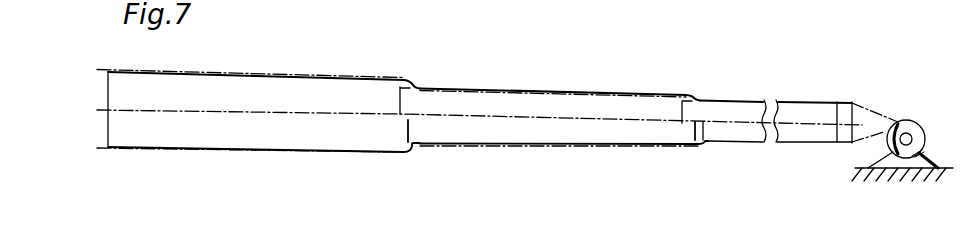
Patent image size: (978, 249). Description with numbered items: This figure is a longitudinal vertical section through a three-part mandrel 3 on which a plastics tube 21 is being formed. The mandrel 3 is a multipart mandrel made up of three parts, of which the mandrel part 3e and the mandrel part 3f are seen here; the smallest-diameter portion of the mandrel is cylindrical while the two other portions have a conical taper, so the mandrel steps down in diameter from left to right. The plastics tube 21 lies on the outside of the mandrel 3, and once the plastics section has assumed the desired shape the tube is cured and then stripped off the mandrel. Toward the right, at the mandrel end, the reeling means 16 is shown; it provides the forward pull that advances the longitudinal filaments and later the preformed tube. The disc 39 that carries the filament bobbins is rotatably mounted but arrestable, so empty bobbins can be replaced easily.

The mandrel 3 is at (660, 74).
The plastics tube 21 is at (212, 73).
The mandrel part 3e is at (312, 133).
The mandrel part 3f is at (590, 133).
The disc 39 is at (787, 113).
The reeling means 16 is at (841, 172).